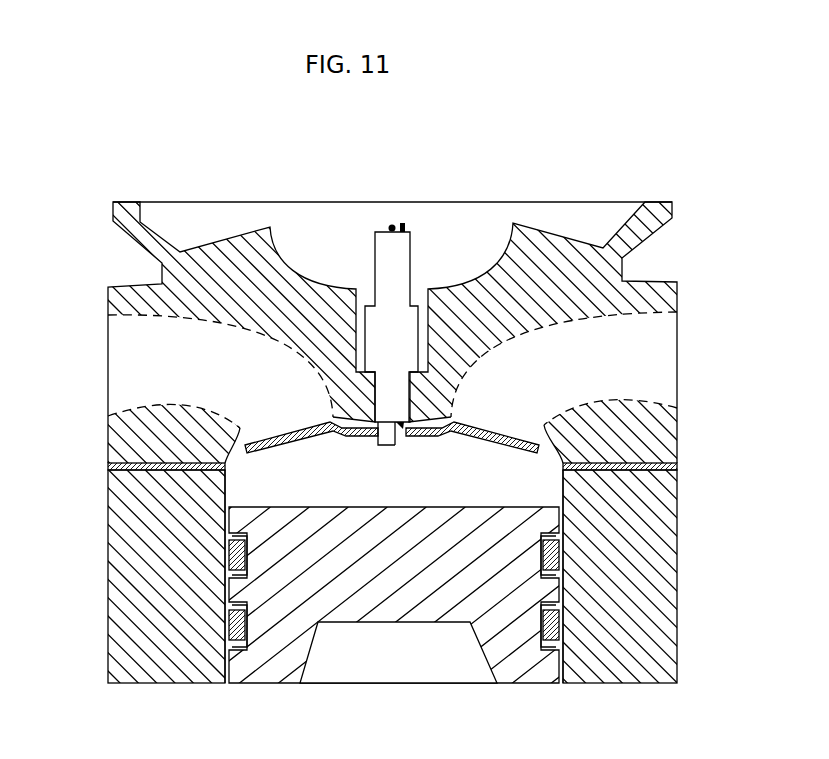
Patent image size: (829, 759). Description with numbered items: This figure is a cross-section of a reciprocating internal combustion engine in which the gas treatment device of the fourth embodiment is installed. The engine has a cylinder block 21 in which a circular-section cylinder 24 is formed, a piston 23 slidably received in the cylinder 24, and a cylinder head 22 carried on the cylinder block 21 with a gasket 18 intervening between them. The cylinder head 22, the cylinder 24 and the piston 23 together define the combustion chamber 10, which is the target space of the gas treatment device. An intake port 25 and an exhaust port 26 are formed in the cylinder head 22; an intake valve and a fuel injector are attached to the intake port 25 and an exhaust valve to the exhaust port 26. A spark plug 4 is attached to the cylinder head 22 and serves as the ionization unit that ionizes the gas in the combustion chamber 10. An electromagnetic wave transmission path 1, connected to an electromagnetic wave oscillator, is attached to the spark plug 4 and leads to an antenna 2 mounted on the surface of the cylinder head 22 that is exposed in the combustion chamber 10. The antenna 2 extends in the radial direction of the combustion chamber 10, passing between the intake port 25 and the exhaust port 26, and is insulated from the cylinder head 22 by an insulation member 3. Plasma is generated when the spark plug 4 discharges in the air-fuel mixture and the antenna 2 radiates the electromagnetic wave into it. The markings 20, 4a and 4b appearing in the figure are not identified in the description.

The electromagnetic wave transmission path 1 is at (433, 316).
The antenna 2 is at (392, 443).
The insulation member 3 is at (262, 440).
The spark plug 4 is at (433, 316).
The first injection hole 4a is at (378, 441).
The second injection hole 4b is at (395, 447).
The combustion chamber 10 is at (445, 479).
The gasket 18 is at (678, 465).
The fuel injection system 20 is at (433, 299).
The cylinder block 21 is at (678, 604).
The cylinder head 22 is at (678, 437).
The piston 23 is at (475, 670).
The cylinder 24 is at (228, 484).
The intake port 25 is at (130, 363).
The exhaust port 26 is at (602, 333).